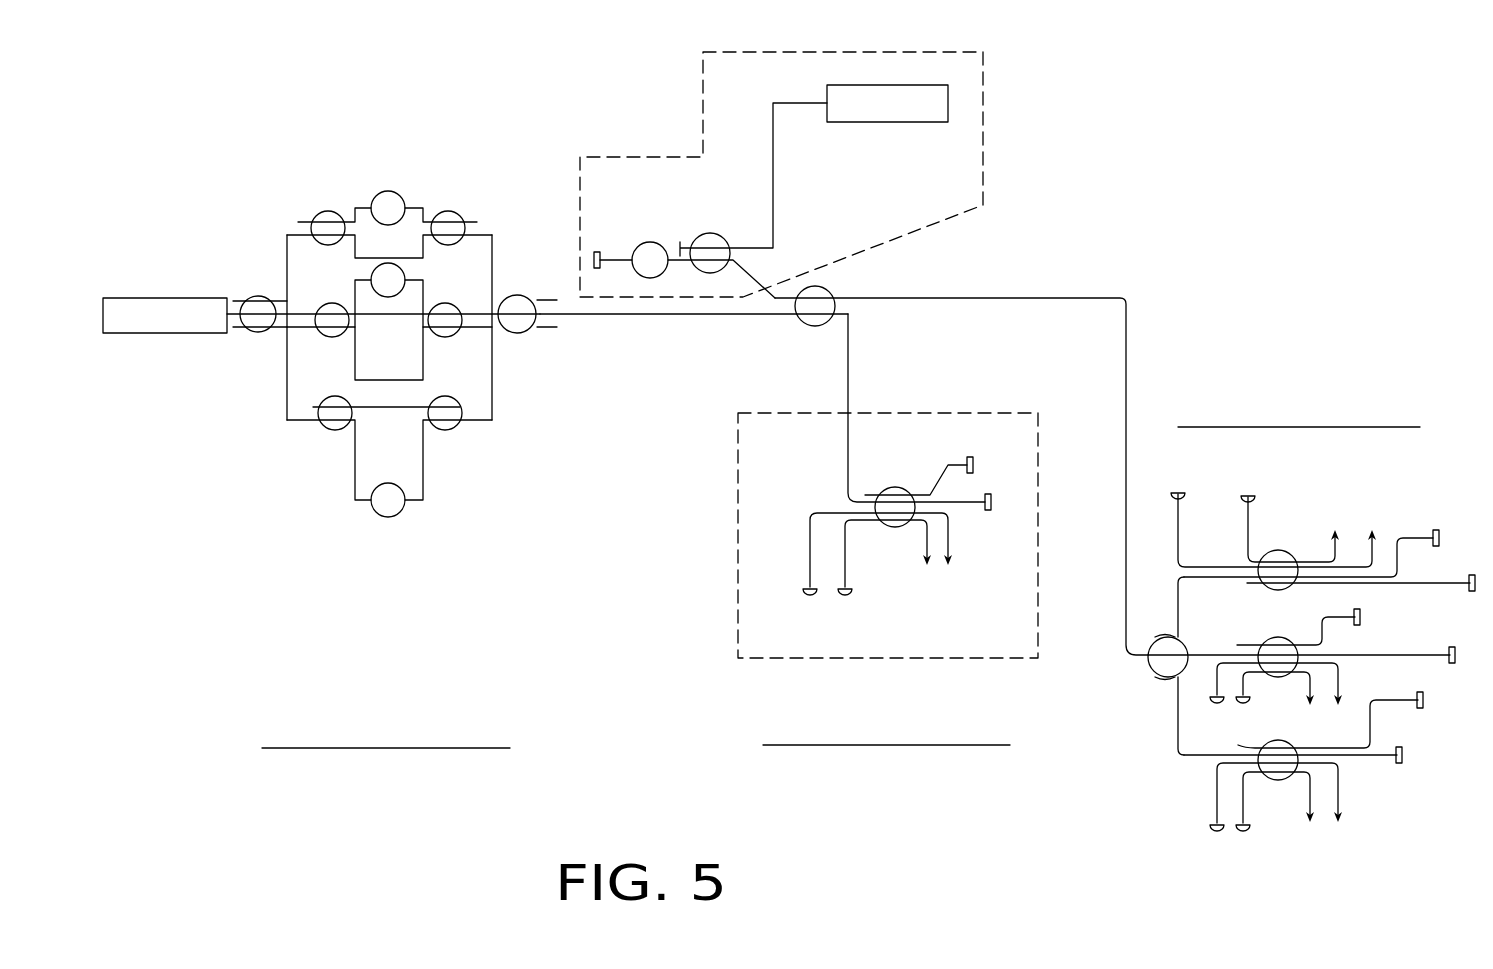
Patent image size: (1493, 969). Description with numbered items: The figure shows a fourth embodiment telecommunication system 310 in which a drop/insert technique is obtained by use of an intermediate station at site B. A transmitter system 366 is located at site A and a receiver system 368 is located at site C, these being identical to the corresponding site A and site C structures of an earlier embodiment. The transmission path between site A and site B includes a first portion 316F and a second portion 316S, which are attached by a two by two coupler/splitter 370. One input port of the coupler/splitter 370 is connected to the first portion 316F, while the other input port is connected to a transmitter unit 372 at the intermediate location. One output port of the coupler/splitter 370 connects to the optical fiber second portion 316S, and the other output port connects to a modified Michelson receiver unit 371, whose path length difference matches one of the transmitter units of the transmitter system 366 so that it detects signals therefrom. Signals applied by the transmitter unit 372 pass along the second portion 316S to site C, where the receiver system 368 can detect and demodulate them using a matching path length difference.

The telecommunication system 310 is at (655, 140).
The transmitter system 366 is at (387, 180).
The first portion of transmission path 316F is at (600, 316).
The second portion of transmission path 316S is at (1030, 297).
The coupler/splitter 370 is at (828, 288).
The receiver unit 371 is at (737, 543).
The transmitter unit 372 is at (985, 157).
The receiver system 368 is at (1150, 810).